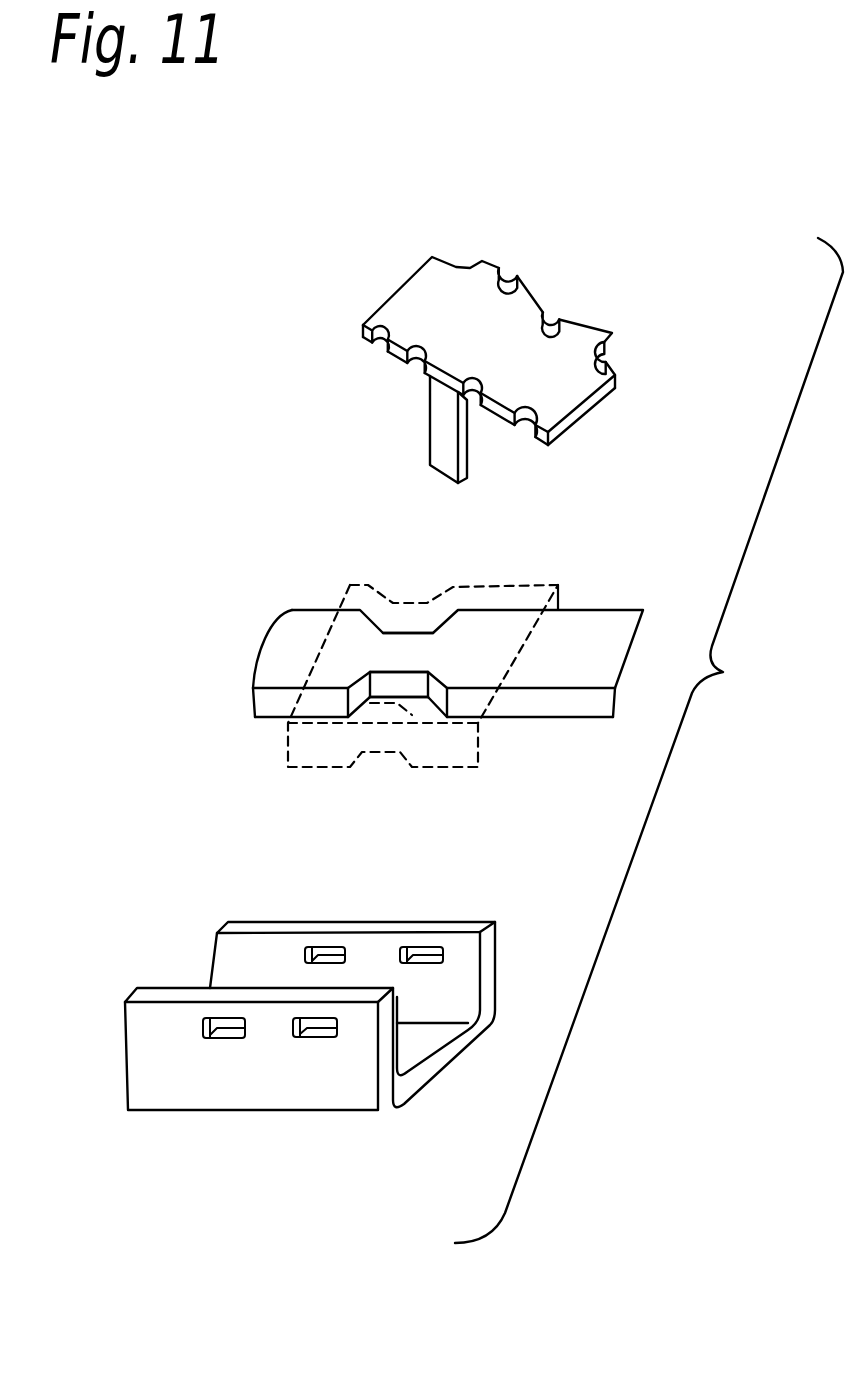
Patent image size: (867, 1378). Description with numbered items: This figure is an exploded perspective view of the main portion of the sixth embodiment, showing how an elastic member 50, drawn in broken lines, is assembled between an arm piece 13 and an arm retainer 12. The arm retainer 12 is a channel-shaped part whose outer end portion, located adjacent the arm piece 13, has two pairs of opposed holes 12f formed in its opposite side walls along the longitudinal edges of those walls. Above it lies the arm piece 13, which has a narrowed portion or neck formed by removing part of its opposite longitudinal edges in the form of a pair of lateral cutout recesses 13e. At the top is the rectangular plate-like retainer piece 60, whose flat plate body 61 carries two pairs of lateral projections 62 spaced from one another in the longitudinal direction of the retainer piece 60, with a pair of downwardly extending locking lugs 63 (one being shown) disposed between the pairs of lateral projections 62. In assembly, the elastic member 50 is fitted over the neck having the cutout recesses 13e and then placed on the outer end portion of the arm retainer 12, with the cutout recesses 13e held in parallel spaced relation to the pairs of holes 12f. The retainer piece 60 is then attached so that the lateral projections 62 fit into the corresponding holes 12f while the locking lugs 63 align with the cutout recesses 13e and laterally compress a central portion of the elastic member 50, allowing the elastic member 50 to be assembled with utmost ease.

The retainer piece 60 is at (374, 272).
The plate body 61 is at (567, 393).
The lateral projections 62 is at (485, 273).
The locking lugs 63 is at (442, 437).
The arm piece 13 is at (602, 635).
The lateral cutout recesses 13e is at (402, 633).
The elastic member 50 is at (350, 585).
The arm retainer 12 is at (268, 1080).
The holes 12f is at (345, 945).